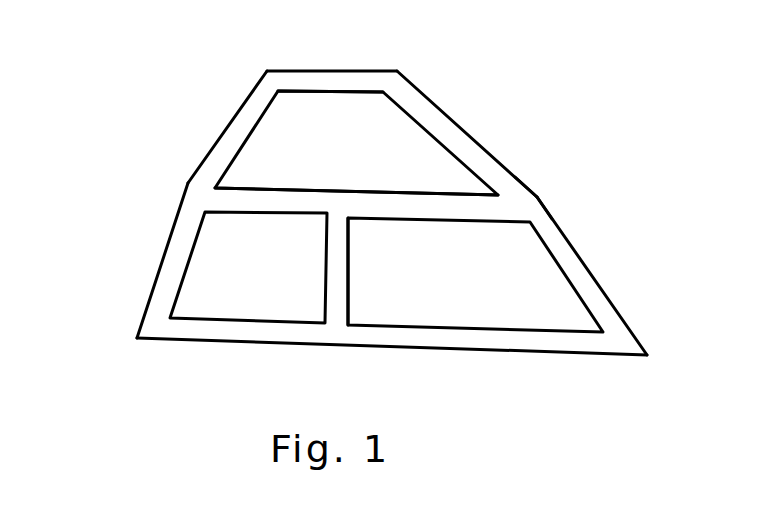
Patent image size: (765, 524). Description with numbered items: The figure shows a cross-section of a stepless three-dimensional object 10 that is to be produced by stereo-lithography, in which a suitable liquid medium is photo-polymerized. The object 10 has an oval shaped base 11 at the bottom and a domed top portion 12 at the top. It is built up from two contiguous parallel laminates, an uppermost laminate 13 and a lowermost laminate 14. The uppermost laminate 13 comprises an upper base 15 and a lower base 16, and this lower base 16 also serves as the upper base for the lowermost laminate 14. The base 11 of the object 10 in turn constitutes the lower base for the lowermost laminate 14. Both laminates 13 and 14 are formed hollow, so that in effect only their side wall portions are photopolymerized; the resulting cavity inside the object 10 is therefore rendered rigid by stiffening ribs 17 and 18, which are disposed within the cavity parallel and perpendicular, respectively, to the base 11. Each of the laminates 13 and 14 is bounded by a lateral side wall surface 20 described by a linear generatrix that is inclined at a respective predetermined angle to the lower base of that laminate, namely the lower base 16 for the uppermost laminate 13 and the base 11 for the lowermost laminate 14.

The stepless 3-dimensional object 10 is at (140, 239).
The oval shaped base 11 is at (533, 348).
The domed top portion 12 is at (323, 62).
The uppermost laminate 13 is at (465, 142).
The lowermost laminate 14 is at (587, 282).
The upper base 15 is at (363, 79).
The lower base 16 is at (540, 197).
The stiffening rib 17 is at (473, 209).
The stiffening rib 18 is at (342, 288).
The lateral side wall surface 20 is at (222, 135).